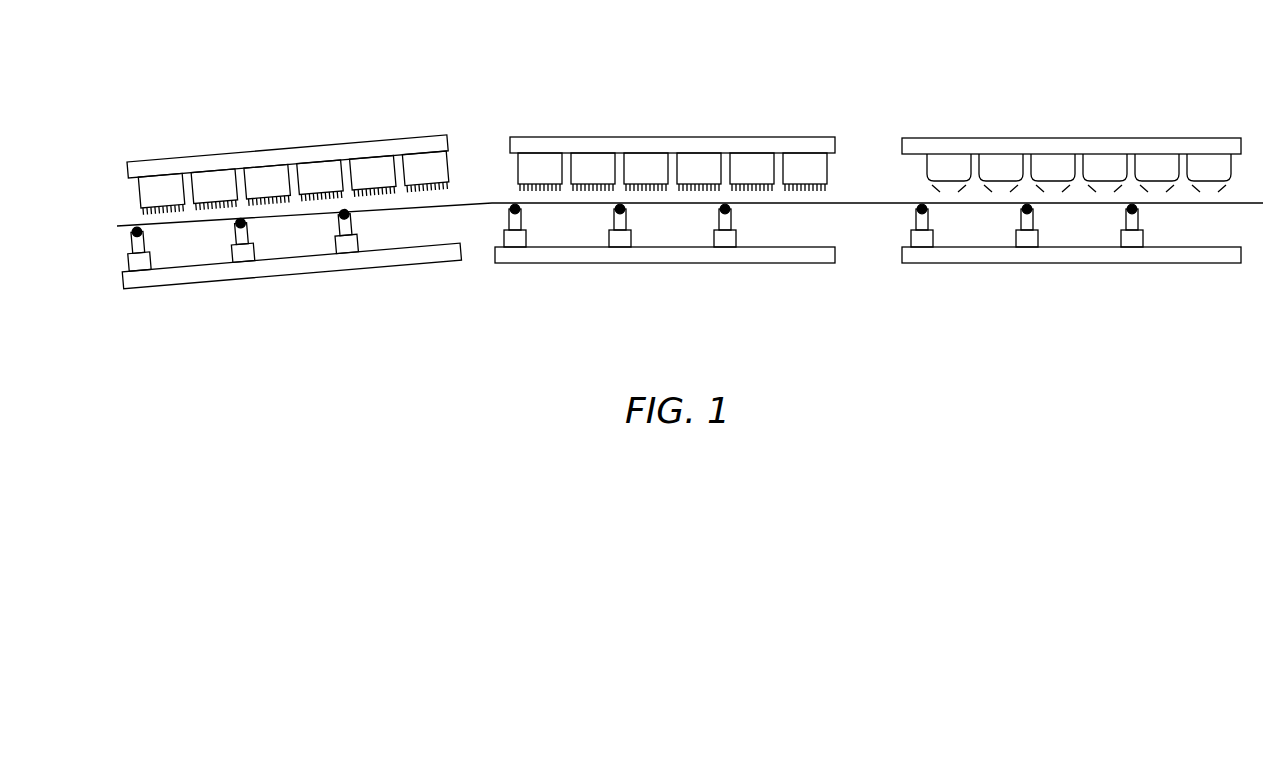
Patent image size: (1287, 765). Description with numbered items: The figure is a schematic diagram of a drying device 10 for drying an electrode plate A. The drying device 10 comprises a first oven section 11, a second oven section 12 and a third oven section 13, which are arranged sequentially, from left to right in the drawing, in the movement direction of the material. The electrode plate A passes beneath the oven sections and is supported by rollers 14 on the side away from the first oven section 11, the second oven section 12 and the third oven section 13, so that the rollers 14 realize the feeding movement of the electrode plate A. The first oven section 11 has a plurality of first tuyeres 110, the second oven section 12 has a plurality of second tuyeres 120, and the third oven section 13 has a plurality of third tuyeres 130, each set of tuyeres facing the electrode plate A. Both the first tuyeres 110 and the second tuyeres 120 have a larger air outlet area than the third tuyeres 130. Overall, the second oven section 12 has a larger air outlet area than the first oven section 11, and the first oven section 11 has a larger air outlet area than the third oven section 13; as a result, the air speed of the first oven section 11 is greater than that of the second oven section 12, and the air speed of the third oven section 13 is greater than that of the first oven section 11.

The drying device 10 is at (717, 34).
The first oven section 11 is at (267, 160).
The first tuyeres 110 is at (138, 190).
The second oven section 12 is at (651, 137).
The second tuyeres 120 is at (518, 164).
The third oven section 13 is at (1057, 137).
The third tuyeres 130 is at (927, 165).
The rollers 14 is at (232, 252).
The electrode plate A is at (126, 229).